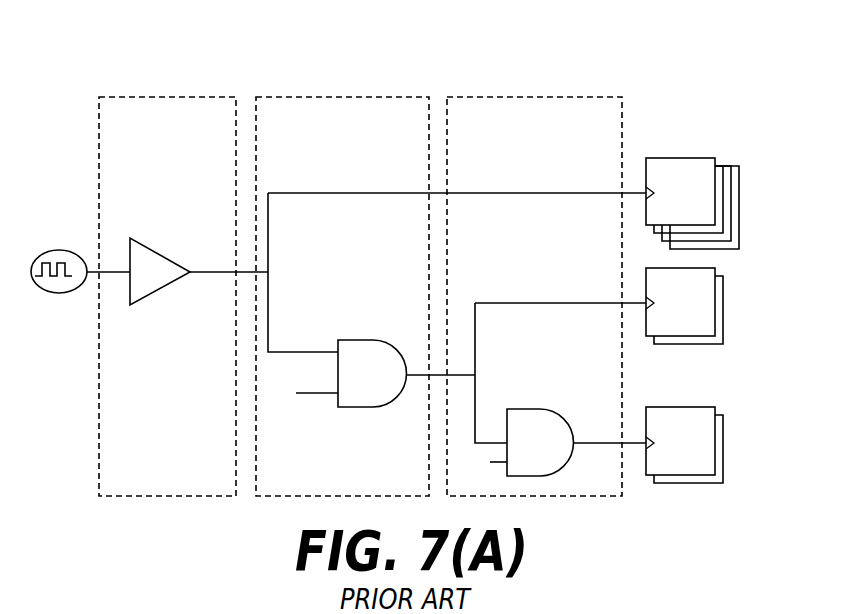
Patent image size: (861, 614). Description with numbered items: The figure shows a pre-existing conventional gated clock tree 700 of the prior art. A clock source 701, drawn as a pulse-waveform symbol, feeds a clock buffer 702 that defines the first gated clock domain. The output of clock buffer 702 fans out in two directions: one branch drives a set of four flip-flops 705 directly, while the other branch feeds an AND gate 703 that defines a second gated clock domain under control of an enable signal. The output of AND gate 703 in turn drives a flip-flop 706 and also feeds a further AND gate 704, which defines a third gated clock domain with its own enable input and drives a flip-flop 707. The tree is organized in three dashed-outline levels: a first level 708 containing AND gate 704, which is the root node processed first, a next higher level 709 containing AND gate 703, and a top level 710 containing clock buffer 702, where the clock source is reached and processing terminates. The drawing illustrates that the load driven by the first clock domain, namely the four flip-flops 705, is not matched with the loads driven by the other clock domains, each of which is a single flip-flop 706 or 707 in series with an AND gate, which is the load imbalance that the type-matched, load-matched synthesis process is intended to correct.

The conventional gated clock tree 700 is at (713, 86).
The clock source 701 is at (50, 250).
The clock buffer 702 is at (165, 255).
The AND gate 703 is at (360, 340).
The AND gate 704 is at (555, 412).
The set of four flip-flops 705 is at (739, 200).
The flip-flop 706 is at (723, 297).
The flip-flop 707 is at (723, 448).
The first level 708 is at (485, 95).
The next higher level 709 is at (332, 95).
The top level 710 is at (148, 94).